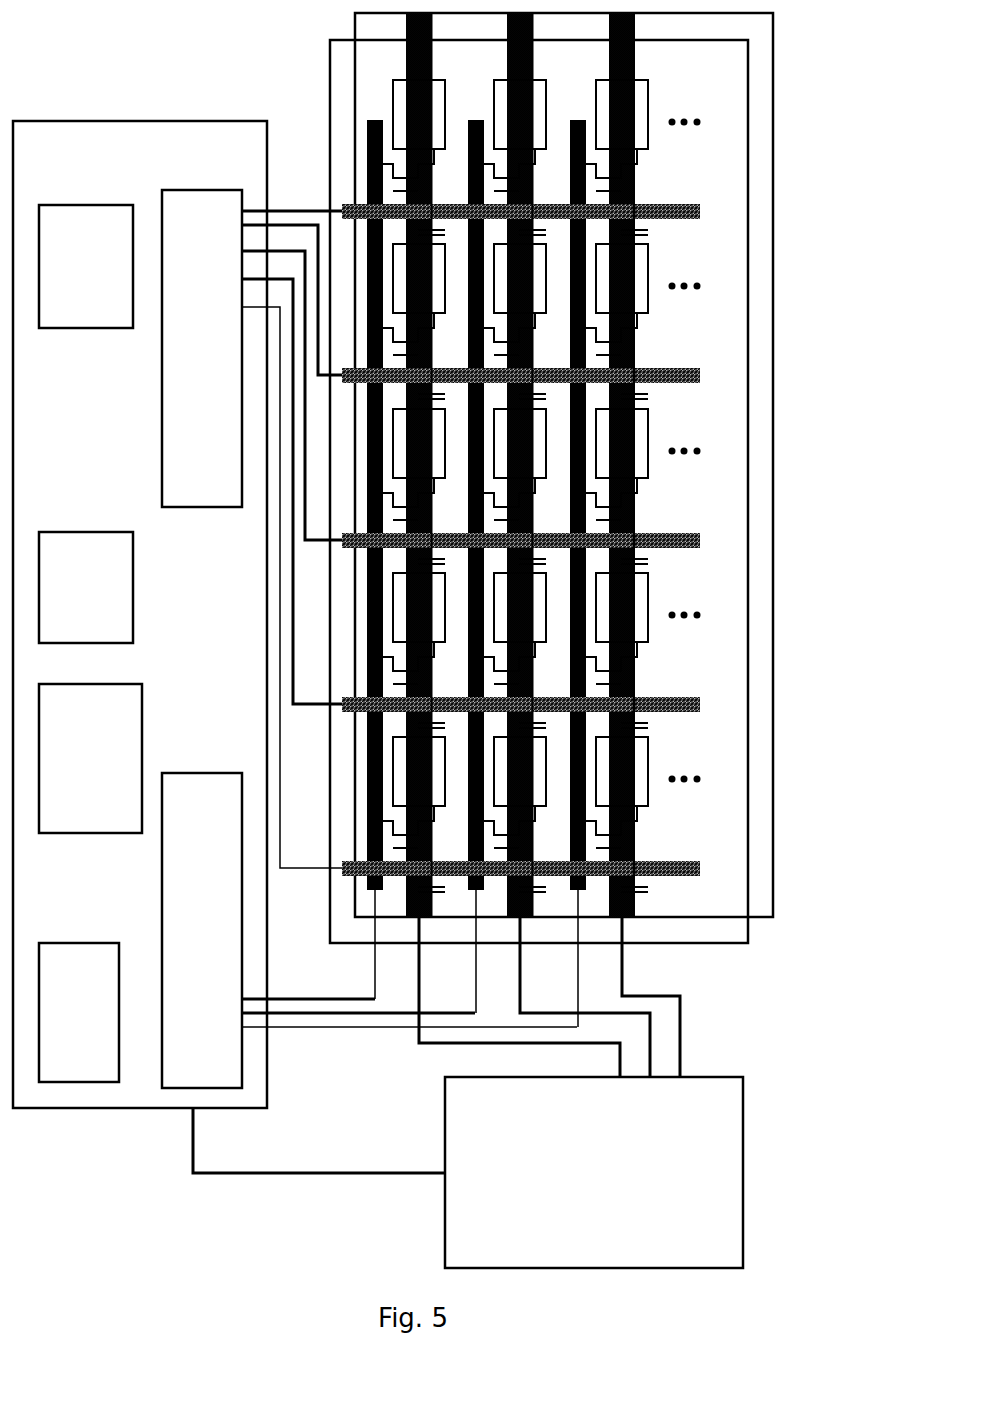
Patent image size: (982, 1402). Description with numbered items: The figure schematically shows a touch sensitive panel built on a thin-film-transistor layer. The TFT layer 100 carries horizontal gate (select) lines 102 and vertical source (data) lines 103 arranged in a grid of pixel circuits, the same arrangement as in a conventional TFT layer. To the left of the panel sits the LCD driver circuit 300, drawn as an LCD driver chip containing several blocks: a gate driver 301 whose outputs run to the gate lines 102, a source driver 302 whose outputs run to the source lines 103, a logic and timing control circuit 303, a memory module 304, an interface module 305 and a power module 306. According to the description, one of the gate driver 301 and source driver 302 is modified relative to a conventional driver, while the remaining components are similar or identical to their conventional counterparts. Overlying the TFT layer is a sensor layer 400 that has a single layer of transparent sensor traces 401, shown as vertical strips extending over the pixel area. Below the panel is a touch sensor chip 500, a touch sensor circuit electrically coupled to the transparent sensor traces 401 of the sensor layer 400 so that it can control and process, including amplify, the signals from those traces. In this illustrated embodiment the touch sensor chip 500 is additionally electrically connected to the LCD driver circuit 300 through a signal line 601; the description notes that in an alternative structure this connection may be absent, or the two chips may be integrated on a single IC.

The TFT layer 100 is at (752, 937).
The gate lines 102 is at (697, 873).
The source lines 103 is at (362, 133).
The LCD driver circuit 300 is at (33, 168).
The gate driver 301 is at (181, 350).
The source driver 302 is at (181, 940).
The logic and timing control circuit 303 is at (67, 278).
The memory module 304 is at (63, 608).
The interface module 305 is at (67, 781).
The power module 306 is at (55, 1033).
The sensor layer 400 is at (773, 725).
The transparent sensor traces 401 is at (537, 918).
The touch sensor chip 500 is at (648, 1208).
The signal line 601 is at (302, 1183).